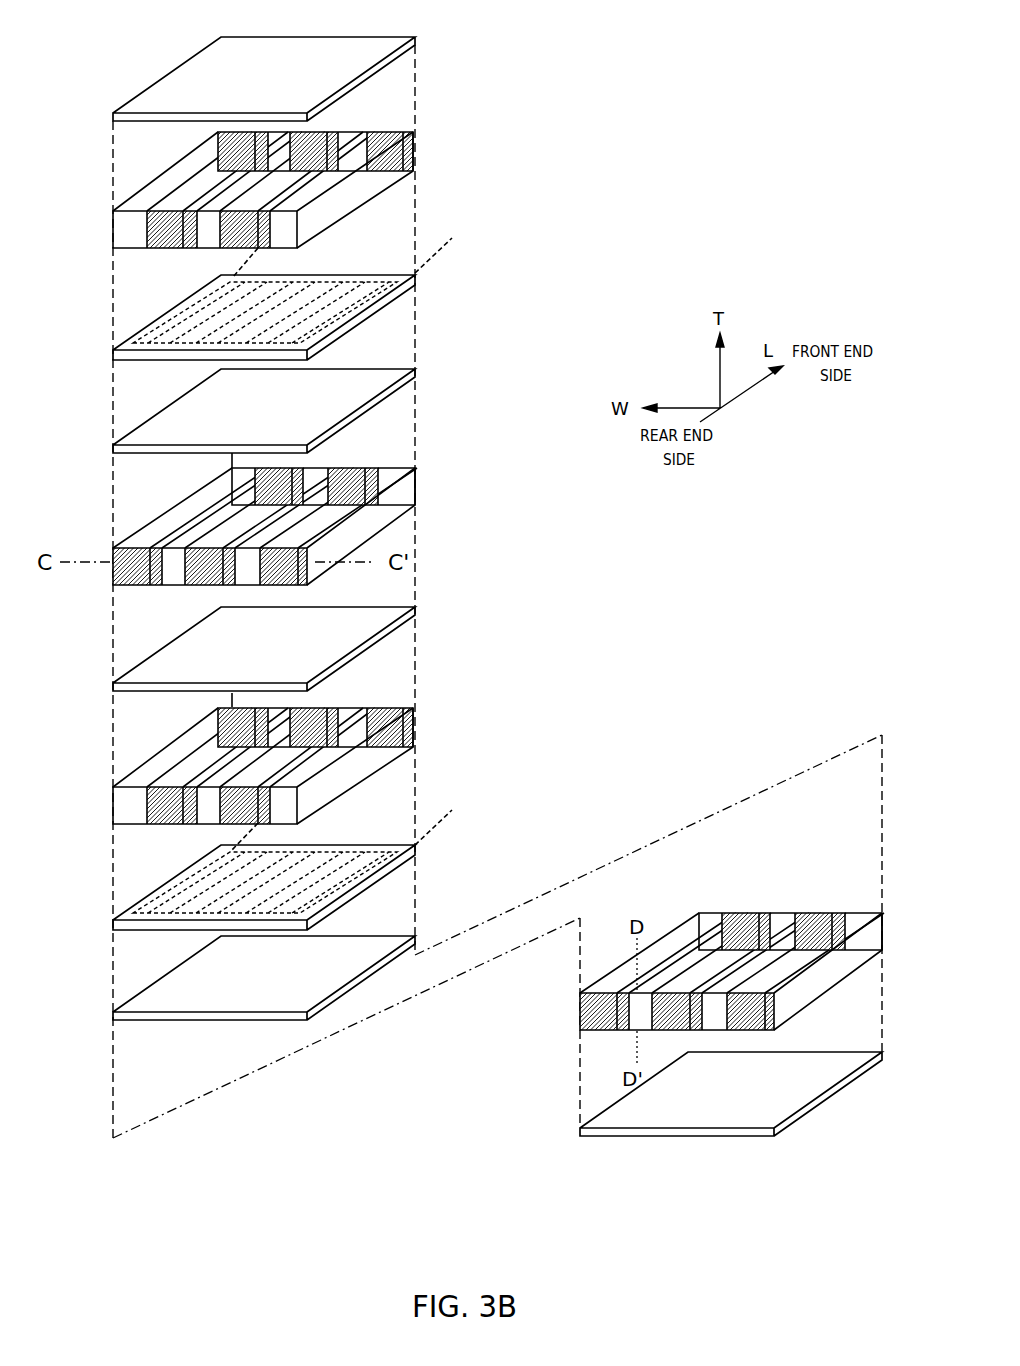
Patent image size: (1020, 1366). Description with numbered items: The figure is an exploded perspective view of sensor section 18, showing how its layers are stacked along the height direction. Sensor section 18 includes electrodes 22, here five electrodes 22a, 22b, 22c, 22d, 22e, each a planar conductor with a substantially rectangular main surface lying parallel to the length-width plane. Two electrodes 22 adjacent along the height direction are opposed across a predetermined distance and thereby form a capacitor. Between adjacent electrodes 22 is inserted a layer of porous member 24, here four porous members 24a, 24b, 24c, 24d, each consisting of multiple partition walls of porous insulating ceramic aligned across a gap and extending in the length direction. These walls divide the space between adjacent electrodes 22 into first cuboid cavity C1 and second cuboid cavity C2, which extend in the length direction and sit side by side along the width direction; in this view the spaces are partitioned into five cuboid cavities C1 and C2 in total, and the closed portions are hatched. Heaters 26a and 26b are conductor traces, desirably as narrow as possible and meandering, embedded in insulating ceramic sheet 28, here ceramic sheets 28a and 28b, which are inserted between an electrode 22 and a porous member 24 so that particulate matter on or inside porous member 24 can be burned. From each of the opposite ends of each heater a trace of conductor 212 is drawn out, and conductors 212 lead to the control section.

The sensor section 18 is at (83, 34).
The electrodes 22 is at (613, 487).
The electrode 22a is at (155, 100).
The electrode 22b is at (130, 437).
The electrode 22c is at (130, 677).
The electrode 22d is at (130, 1010).
The electrode 22e is at (588, 1125).
The porous member 24 is at (765, 487).
The porous member 24a is at (130, 203).
The porous member 24b is at (130, 540).
The porous member 24c is at (130, 775).
The porous member 24d is at (580, 988).
The heater 26a is at (362, 328).
The heater 26b is at (365, 887).
The insulating ceramic sheet 28 is at (613, 592).
The ceramic sheet 28a is at (125, 342).
The ceramic sheet 28b is at (125, 912).
The conductor 212 is at (247, 265).
The first cuboid cavity C1 is at (706, 923).
The second cuboid cavity C2 is at (747, 916).